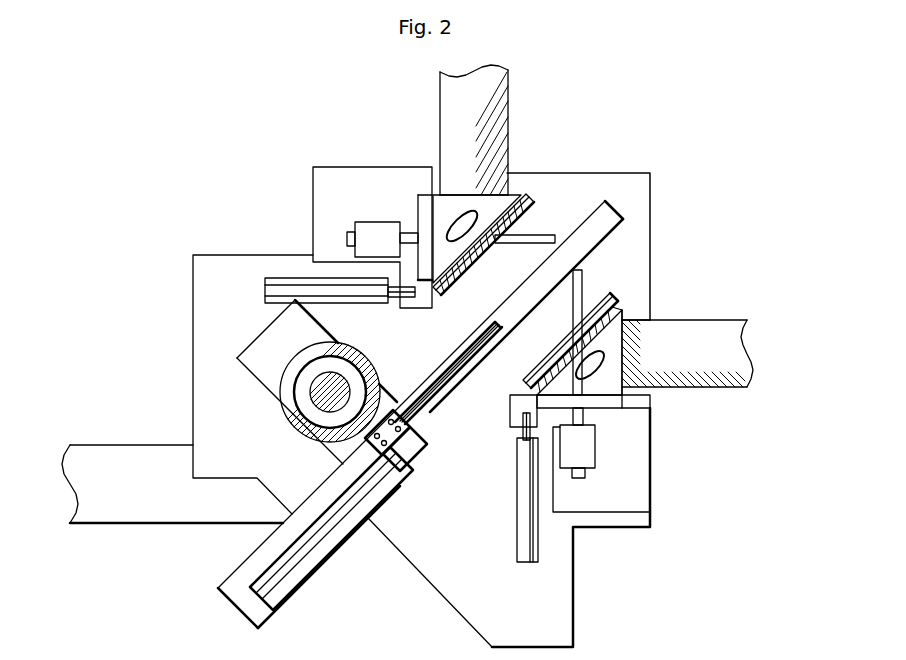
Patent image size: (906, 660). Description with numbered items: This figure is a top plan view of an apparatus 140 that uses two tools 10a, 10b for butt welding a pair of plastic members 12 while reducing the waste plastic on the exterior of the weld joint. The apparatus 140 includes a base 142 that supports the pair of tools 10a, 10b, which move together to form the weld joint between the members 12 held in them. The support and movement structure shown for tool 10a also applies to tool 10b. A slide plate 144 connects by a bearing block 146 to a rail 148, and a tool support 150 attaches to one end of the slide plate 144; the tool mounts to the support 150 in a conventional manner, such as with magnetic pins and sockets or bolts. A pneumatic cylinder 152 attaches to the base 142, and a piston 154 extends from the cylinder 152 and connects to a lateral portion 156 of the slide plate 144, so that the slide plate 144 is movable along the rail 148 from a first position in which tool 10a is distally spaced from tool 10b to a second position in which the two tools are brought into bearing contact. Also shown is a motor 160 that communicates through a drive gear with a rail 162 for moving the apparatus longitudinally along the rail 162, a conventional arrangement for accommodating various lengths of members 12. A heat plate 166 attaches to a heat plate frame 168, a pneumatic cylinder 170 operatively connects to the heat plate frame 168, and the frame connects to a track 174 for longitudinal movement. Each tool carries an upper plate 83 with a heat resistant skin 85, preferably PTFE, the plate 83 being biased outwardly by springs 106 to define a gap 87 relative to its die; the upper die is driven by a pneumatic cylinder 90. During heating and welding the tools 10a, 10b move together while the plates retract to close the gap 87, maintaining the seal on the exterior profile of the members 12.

The plastic member 12 is at (482, 86).
The tool 10b is at (500, 200).
The tool 10a is at (625, 330).
The skin 85 is at (610, 293).
The upper plate 83 is at (600, 320).
The gap 87 is at (603, 333).
The spring 106 is at (612, 345).
The pneumatic cylinder 90 is at (592, 362).
The tool support 150 is at (615, 400).
The apparatus 140 is at (690, 420).
The base 142 is at (480, 607).
The slide plate 144 is at (625, 453).
The bearing block 146 is at (596, 460).
The rail 148 is at (575, 478).
The pneumatic cylinder 152 is at (517, 536).
The piston 154 is at (525, 430).
The lateral portion 156 is at (523, 403).
The motor 160 is at (287, 383).
The rail 162 is at (138, 480).
The heat plate 166 is at (495, 323).
The heat plate frame 168 is at (260, 552).
The pneumatic cylinder 170 is at (300, 572).
The track 174 is at (453, 362).